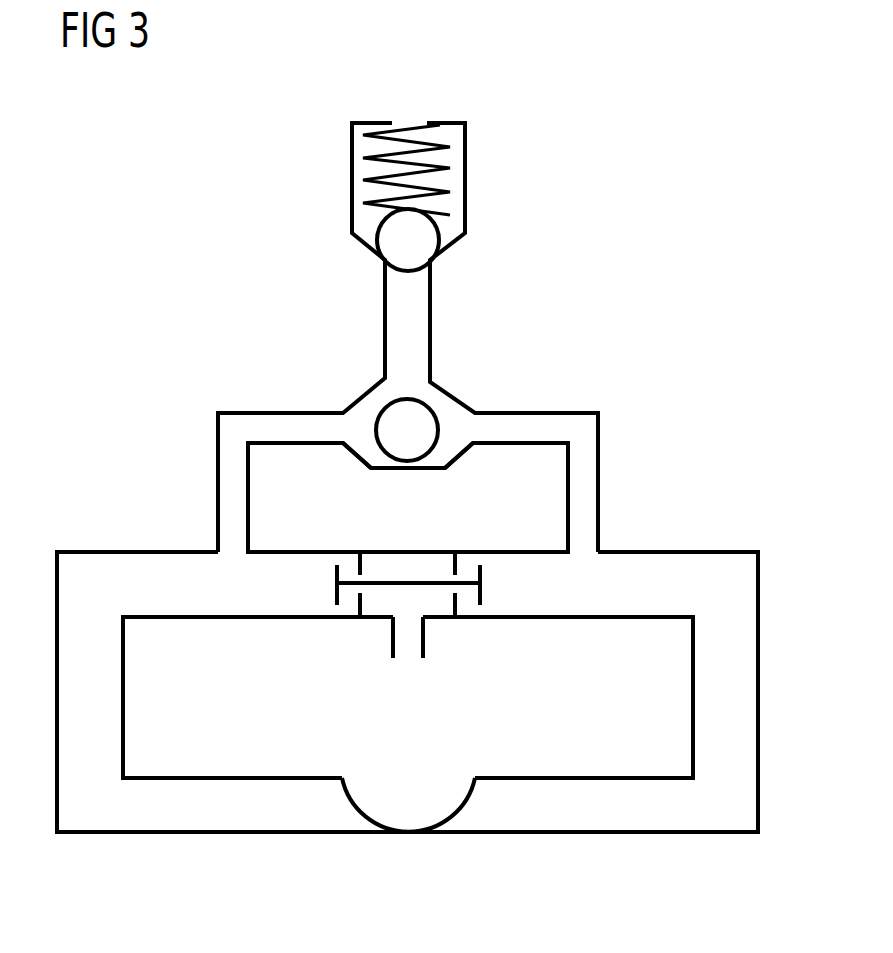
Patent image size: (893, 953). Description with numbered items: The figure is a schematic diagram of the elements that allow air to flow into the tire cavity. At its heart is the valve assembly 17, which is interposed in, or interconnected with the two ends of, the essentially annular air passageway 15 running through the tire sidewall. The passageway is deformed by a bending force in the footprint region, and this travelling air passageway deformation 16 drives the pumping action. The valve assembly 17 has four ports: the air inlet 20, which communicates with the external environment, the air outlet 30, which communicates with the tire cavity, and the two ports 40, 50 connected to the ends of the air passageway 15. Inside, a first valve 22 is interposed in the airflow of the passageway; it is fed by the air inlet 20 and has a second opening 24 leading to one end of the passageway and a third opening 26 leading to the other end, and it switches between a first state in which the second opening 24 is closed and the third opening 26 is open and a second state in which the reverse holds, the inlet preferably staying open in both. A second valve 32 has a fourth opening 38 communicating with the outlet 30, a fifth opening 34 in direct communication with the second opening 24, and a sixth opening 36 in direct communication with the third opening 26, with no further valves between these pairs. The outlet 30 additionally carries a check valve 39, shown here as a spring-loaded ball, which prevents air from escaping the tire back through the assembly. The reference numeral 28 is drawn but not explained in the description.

The air passageway 15 is at (163, 808).
The air passageway deformation 16 is at (410, 833).
The valve assembly 17 is at (607, 350).
The air inlet 20 is at (410, 668).
The first valve 22 is at (437, 622).
The second opening 24 is at (460, 577).
The third opening 26 is at (353, 590).
The passage wall 28 is at (388, 625).
The air outlet 30 is at (415, 120).
The second valve 32 is at (465, 405).
The fifth opening 34 is at (475, 447).
The sixth opening 36 is at (337, 447).
The fourth opening 38 is at (435, 372).
The check valve 39 is at (472, 195).
The port 40 is at (137, 552).
The port 50 is at (683, 552).